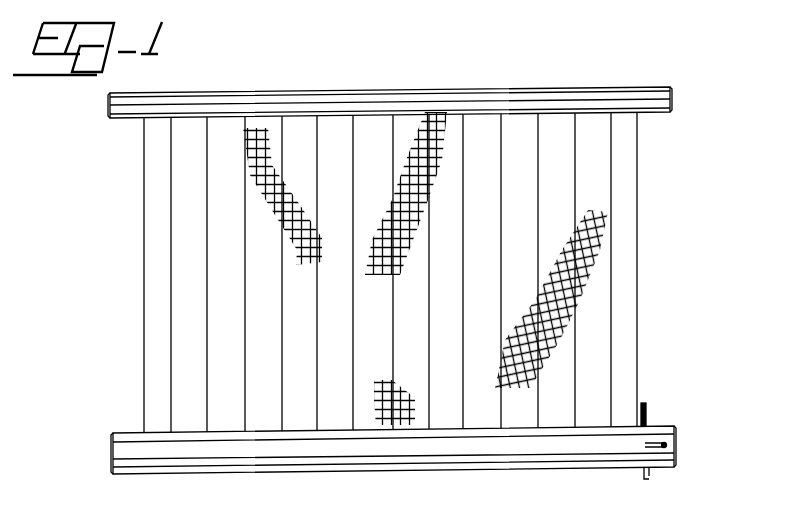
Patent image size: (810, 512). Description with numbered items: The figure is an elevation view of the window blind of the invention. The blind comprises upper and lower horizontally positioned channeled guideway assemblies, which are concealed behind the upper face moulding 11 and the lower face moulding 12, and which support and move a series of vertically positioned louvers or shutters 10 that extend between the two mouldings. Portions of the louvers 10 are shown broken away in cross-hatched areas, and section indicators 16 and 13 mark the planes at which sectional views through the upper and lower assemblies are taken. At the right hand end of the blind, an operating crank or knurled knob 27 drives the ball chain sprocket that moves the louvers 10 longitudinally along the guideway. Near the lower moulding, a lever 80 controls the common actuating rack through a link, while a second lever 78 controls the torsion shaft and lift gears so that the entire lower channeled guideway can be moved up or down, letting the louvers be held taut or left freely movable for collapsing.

The louvers 10 is at (225, 257).
The upper face moulding 11 is at (672, 100).
The lower face moulding 12 is at (120, 452).
The section line 13 is at (410, 387).
The section line 16 is at (443, 68).
The knurled knob 27 is at (648, 412).
The lever 78 is at (648, 473).
The lever 80 is at (668, 446).